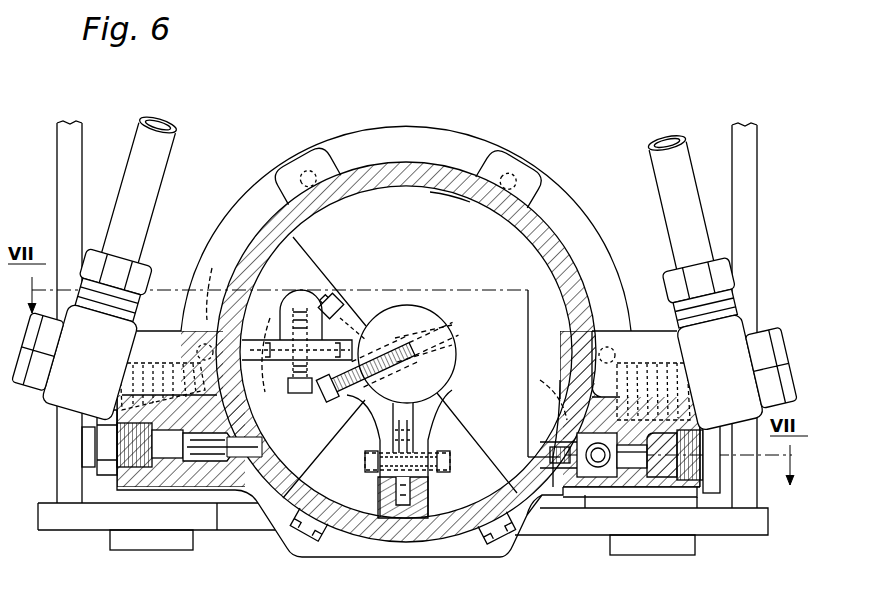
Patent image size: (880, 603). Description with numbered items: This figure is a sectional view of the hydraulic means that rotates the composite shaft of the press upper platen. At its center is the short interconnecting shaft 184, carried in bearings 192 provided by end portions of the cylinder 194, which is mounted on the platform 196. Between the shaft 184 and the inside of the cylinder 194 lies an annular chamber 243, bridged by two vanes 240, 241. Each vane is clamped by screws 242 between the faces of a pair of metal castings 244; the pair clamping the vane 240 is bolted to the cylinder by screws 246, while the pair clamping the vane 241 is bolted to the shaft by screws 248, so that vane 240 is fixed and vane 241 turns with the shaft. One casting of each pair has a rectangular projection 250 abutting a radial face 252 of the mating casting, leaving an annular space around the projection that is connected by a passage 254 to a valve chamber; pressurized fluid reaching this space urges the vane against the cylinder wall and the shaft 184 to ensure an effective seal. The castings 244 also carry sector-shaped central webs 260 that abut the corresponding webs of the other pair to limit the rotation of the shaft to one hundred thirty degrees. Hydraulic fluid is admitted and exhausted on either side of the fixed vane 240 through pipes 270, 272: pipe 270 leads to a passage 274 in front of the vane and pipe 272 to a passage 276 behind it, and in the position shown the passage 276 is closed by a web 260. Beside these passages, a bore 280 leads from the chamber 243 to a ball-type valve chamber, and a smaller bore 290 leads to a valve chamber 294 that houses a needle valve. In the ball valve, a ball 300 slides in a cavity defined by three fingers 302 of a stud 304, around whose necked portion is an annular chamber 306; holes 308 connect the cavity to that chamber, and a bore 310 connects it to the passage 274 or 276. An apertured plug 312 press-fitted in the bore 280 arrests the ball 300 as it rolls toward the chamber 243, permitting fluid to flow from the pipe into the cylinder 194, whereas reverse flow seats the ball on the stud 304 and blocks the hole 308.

The interconnecting shaft 184 is at (405, 315).
The bearings 192 is at (268, 182).
The cylinder 194 is at (362, 173).
The platform 196 is at (78, 522).
The vane 240 is at (403, 512).
The vane 241 is at (217, 343).
The screws 242 is at (300, 393).
The annular chamber 243 is at (453, 208).
The metal castings 244 is at (302, 260).
The screws 246 is at (336, 543).
The screws 248 is at (334, 296).
The rectangular projection 250 is at (432, 500).
The radial face 252 is at (395, 500).
The passage 254 is at (379, 367).
The central webs 260 is at (272, 503).
The pipe 270 is at (655, 158).
The pipe 272 is at (142, 148).
The passage 274 is at (542, 457).
The passage 276 is at (162, 361).
The bore 280 is at (548, 457).
The bore 290 is at (215, 482).
The valve chamber 294 is at (158, 480).
The ball 300 is at (592, 487).
The fingers 302 is at (600, 477).
The stud 304 is at (712, 493).
The annular chamber 306 is at (637, 487).
The holes 308 is at (648, 487).
The bore 310 is at (636, 362).
The apertured plug 312 is at (555, 500).